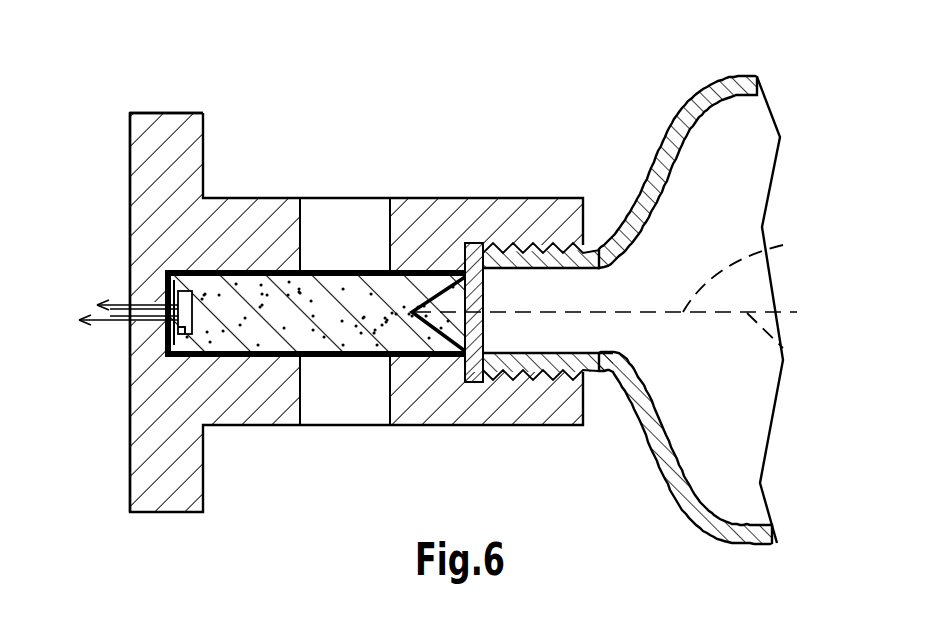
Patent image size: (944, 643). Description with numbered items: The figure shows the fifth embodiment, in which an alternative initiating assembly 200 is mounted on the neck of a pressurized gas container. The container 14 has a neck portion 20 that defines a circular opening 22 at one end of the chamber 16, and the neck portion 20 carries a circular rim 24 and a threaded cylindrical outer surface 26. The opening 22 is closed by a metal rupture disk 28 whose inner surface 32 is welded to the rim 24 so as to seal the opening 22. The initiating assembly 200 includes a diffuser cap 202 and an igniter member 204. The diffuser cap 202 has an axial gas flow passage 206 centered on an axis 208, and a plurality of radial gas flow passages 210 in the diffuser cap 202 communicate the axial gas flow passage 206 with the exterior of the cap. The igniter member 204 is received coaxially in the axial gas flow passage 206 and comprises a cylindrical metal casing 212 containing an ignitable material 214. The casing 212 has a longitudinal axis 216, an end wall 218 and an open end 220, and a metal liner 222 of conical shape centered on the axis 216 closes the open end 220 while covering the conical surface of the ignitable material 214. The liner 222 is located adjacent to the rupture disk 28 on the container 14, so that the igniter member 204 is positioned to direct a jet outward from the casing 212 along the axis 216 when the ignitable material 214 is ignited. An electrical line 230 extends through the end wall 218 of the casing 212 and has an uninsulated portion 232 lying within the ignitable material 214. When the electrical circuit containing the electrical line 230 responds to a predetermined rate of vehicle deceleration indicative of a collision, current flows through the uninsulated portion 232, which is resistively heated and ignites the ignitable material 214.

The initiating assembly 200 is at (128, 110).
The diffuser cap 202 is at (128, 181).
The igniter member 204 is at (133, 253).
The axial gas flow passage 206 is at (330, 290).
The radial gas flow passages 210 is at (362, 217).
The cylindrical metal casing 212 is at (232, 270).
The ignitable material 214 is at (272, 293).
The longitudinal axis 216 is at (790, 352).
The end wall 218 is at (170, 333).
The open end 220 is at (498, 372).
The metal liner 222 is at (425, 330).
The electrical line 230 is at (102, 323).
The uninsulated portion 232 is at (240, 356).
The axis 208 is at (783, 247).
The container 14 is at (660, 125).
The chamber 16 is at (724, 135).
The neck portion 20 is at (520, 244).
The circular opening 22 is at (492, 287).
The circular rim 24 is at (464, 245).
The threaded cylindrical outer surface 26 is at (580, 372).
The metal rupture disk 28 is at (483, 318).
The inner surface 32 is at (483, 345).